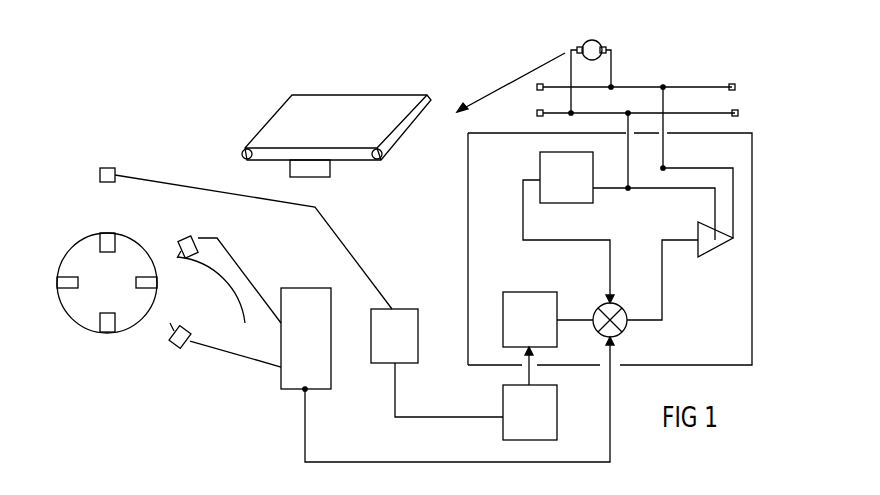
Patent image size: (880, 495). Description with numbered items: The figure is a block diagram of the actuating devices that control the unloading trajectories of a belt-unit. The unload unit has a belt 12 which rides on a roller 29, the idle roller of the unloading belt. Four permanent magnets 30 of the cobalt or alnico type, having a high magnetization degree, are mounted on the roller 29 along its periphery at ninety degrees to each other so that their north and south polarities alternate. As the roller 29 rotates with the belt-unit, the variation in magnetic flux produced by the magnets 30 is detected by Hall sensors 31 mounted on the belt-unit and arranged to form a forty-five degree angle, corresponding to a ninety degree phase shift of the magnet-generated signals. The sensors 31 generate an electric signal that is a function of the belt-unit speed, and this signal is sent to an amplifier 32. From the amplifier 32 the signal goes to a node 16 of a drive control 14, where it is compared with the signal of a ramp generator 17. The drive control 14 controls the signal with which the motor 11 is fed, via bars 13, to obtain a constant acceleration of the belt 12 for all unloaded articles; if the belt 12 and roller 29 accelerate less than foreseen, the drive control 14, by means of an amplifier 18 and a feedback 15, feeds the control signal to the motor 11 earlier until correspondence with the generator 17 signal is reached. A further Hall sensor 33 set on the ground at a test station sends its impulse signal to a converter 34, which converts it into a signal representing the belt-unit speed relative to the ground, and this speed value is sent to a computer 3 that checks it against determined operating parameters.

The computer 3 is at (530, 412).
The motor 11 is at (597, 40).
The belt 12 is at (348, 160).
The bars 13 is at (740, 110).
The drive control 14 is at (752, 230).
The feedback 15 is at (566, 177).
The node 16 is at (623, 332).
The ramp generator 17 is at (530, 319).
The amplifier 18 is at (715, 253).
The roller 29 is at (245, 150).
The permanent magnets 30 is at (112, 240).
The sensors 31 is at (191, 239).
The amplifier 32 is at (306, 338).
The Hall sensor 33 is at (108, 168).
The converter 34 is at (394, 336).